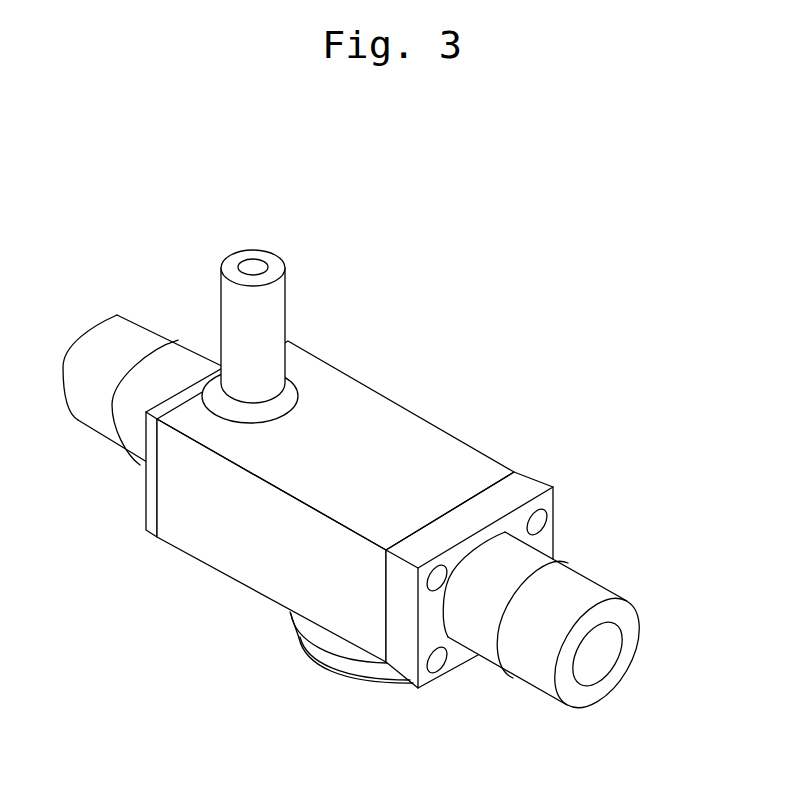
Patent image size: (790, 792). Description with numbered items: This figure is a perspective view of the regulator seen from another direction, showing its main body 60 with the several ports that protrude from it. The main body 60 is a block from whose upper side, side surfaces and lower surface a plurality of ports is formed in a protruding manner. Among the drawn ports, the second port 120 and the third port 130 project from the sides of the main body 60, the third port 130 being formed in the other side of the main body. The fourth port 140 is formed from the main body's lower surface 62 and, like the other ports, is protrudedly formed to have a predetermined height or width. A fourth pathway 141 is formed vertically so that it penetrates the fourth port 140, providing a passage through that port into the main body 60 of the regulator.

The main body 60 is at (235, 600).
The main body's lower surface 62 is at (405, 442).
The second port 120 is at (615, 582).
The third port 130 is at (140, 302).
The fourth port 140 is at (295, 278).
The fourth pathway 141 is at (253, 265).